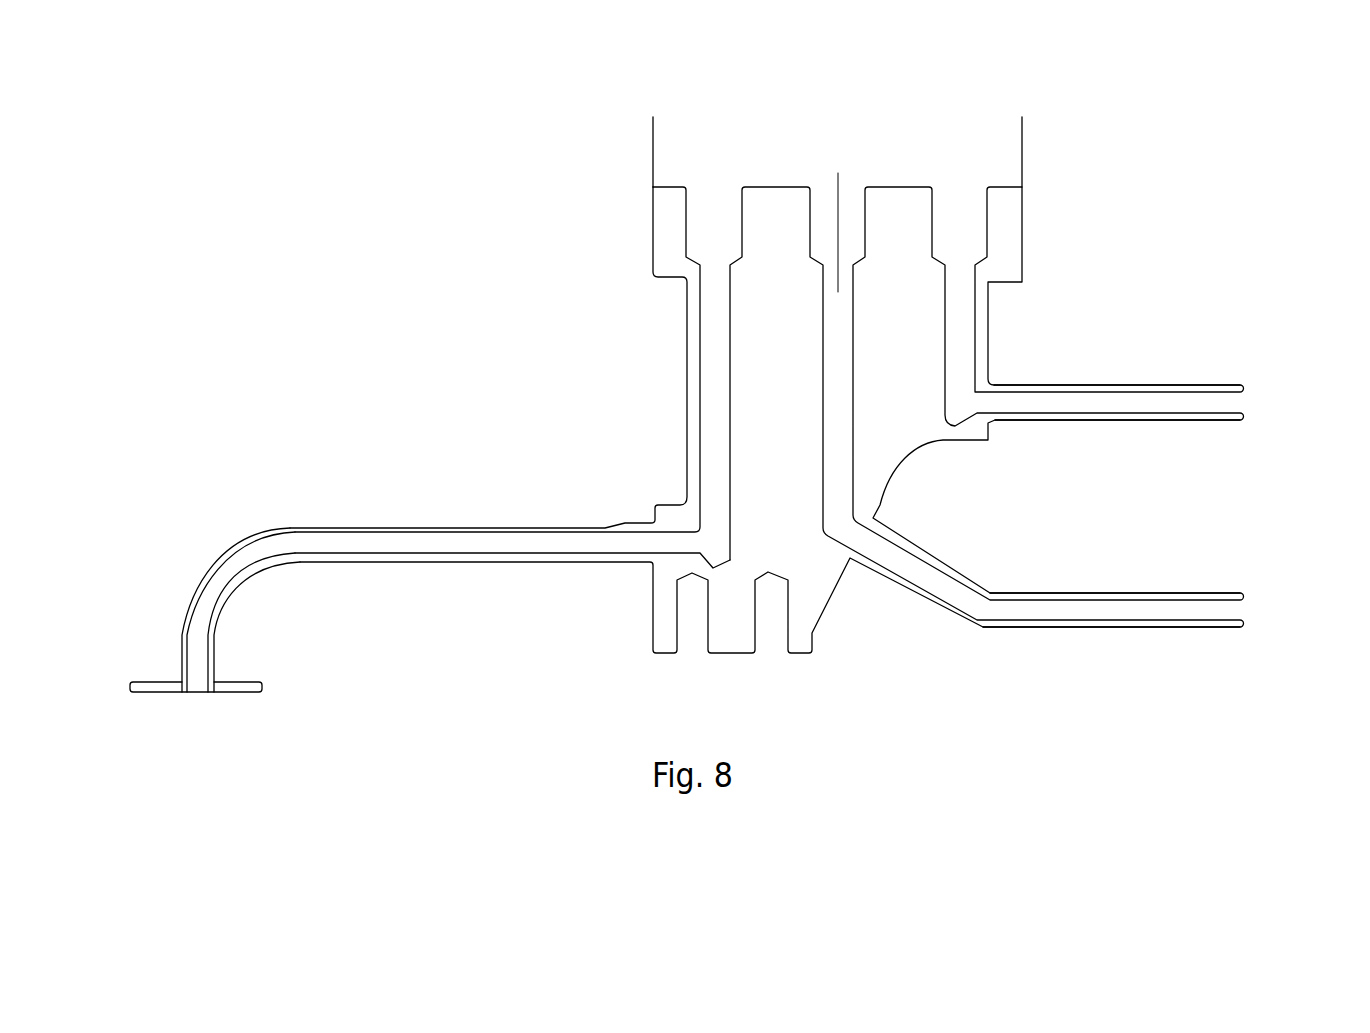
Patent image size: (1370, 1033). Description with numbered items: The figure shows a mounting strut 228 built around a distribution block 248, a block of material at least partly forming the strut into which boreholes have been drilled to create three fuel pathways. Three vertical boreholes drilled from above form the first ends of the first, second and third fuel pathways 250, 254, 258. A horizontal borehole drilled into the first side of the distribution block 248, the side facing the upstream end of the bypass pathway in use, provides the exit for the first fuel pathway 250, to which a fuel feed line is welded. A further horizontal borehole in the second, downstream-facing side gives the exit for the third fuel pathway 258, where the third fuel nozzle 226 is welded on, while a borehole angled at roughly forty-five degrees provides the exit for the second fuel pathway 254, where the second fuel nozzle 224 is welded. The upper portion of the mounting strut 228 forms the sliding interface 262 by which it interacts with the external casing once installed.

The second fuel nozzle 224 is at (1226, 635).
The third fuel nozzle 226 is at (1227, 380).
The mounting strut 228 is at (612, 205).
The distribution block 248 is at (680, 392).
The first fuel pathway 250 is at (442, 570).
The second fuel pathway 254 is at (1128, 585).
The third fuel pathway 258 is at (1128, 428).
The sliding interface 262 is at (661, 123).